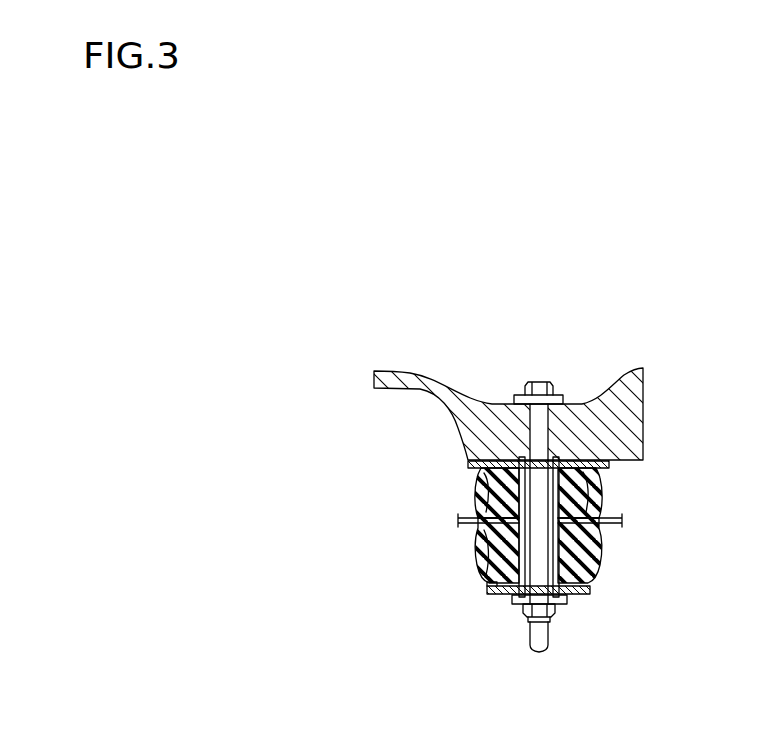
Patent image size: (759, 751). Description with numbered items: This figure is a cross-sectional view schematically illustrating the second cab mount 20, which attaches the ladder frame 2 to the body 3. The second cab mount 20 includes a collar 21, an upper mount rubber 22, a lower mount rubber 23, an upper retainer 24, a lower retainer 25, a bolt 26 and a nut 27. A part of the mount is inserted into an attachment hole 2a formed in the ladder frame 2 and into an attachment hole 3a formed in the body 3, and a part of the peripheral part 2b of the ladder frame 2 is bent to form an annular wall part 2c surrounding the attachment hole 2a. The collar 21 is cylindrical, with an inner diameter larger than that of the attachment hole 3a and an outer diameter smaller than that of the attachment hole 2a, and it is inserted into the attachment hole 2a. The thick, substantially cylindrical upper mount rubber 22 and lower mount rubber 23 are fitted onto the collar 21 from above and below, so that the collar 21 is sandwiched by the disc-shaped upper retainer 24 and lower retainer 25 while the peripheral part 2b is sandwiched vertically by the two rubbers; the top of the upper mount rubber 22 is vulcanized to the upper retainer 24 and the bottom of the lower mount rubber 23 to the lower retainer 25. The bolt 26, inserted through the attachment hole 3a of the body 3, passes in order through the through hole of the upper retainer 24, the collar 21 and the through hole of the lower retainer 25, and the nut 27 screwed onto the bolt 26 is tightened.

The ladder frame 2 is at (542, 548).
The attachment hole 2a is at (605, 490).
The peripheral part 2b is at (478, 500).
The annular wall part 2c is at (483, 568).
The body 3 is at (612, 375).
The attachment hole 3a is at (540, 428).
The second cab mount 20 is at (542, 489).
The collar 21 is at (582, 468).
The upper mount rubber 22 is at (478, 484).
The lower mount rubber 23 is at (478, 534).
The upper retainer 24 is at (476, 444).
The lower retainer 25 is at (504, 595).
The bolt 26 is at (540, 380).
The nut 27 is at (556, 608).